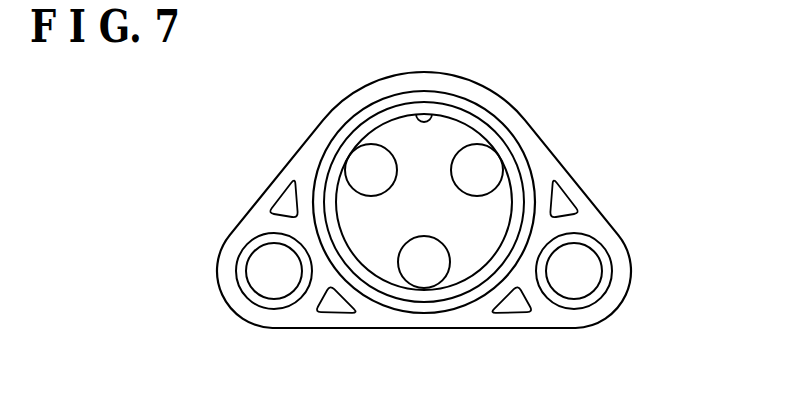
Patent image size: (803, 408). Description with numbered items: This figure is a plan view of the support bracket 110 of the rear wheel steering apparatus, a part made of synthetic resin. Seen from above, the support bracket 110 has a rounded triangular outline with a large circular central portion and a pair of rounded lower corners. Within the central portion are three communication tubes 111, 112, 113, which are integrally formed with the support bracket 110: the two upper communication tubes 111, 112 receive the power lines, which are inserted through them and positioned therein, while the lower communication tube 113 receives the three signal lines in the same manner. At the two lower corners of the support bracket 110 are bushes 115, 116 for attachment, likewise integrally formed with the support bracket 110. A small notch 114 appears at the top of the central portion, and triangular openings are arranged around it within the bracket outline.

The support bracket 110 is at (553, 140).
The communication tube 111 is at (480, 163).
The communication tube 112 is at (360, 163).
The communication tube 113 is at (423, 272).
The notch 114 is at (414, 111).
The bush 115 is at (247, 292).
The bush 116 is at (603, 258).